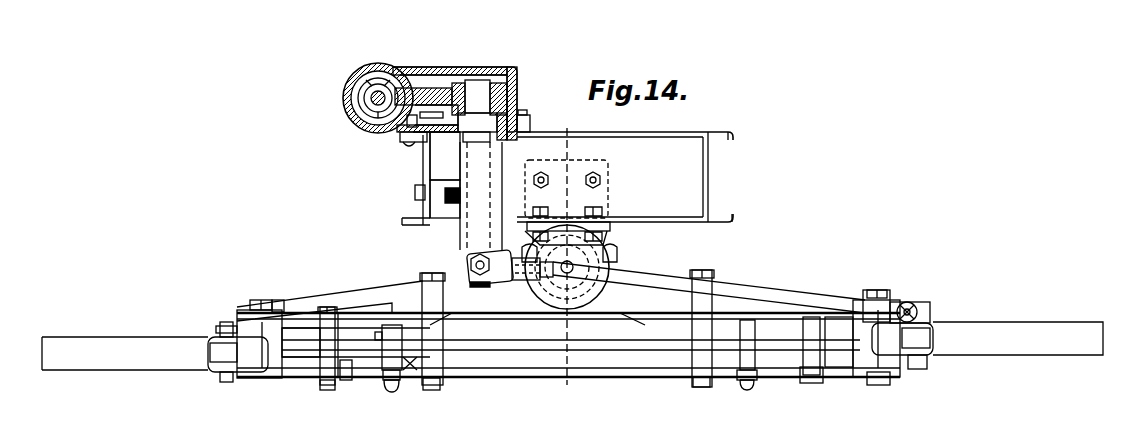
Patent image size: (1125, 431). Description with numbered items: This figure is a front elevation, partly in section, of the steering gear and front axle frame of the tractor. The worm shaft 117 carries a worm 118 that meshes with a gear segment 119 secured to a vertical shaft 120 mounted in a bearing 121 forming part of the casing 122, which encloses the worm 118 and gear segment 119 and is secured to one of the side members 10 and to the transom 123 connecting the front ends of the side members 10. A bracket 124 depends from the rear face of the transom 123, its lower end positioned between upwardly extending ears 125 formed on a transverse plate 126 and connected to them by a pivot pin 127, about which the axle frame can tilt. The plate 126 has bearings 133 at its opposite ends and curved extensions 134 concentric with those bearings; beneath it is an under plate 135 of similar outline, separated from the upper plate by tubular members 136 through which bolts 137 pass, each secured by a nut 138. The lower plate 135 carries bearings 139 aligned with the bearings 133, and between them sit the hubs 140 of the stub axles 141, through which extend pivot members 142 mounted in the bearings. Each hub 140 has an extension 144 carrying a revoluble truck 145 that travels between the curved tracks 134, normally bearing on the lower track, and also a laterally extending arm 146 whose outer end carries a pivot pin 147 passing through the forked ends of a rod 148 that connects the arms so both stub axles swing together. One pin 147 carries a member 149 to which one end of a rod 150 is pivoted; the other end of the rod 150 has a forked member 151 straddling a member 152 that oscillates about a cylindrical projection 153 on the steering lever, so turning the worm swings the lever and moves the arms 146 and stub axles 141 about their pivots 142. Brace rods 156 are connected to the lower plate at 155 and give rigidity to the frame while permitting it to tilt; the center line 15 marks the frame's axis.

The side member 10 is at (423, 170).
The center line 15 is at (567, 261).
The worm shaft 117 is at (352, 85).
The worm 118 is at (362, 124).
The gear segment 119 is at (428, 95).
The vertical shaft 120 is at (478, 92).
The bearing 121 is at (505, 168).
The casing 122 is at (526, 116).
The transom 123 is at (672, 124).
The bracket 124 is at (600, 229).
The ear 125 is at (585, 268).
The plate 126 is at (618, 308).
The pivot pin 127 is at (570, 264).
The bearing 133 is at (278, 300).
The curved extension 134 is at (362, 298).
The under plate 135 is at (655, 378).
The tubular member 136 is at (338, 368).
The bolt 137 is at (329, 308).
The nut 138 is at (350, 386).
The bearing 139 is at (245, 382).
The hub 140 is at (266, 352).
The stub axle 141 is at (105, 340).
The pivot member 142 is at (257, 300).
The extension 144 is at (335, 362).
The revoluble truck 145 is at (420, 336).
The arm 146 is at (212, 352).
The pivot pin 147 is at (227, 384).
The rod 148 is at (612, 348).
The member 149 is at (917, 308).
The rod 150 is at (742, 297).
The forked member 151 is at (528, 282).
The member 152 is at (496, 282).
The cylindrical projection 153 is at (471, 258).
The connection point 155 is at (392, 395).
The brace rod 156 is at (456, 327).